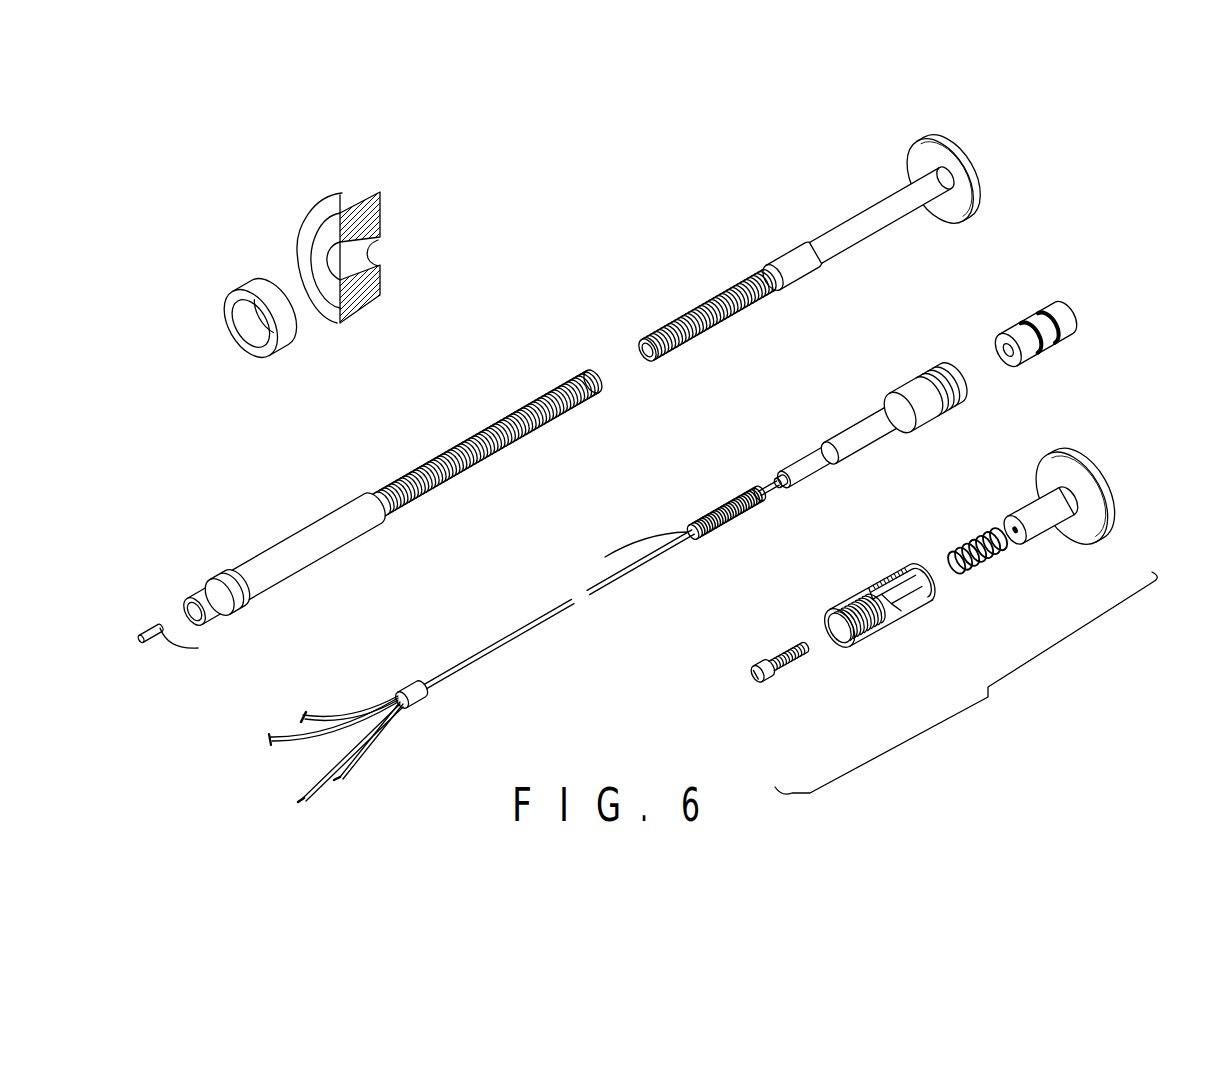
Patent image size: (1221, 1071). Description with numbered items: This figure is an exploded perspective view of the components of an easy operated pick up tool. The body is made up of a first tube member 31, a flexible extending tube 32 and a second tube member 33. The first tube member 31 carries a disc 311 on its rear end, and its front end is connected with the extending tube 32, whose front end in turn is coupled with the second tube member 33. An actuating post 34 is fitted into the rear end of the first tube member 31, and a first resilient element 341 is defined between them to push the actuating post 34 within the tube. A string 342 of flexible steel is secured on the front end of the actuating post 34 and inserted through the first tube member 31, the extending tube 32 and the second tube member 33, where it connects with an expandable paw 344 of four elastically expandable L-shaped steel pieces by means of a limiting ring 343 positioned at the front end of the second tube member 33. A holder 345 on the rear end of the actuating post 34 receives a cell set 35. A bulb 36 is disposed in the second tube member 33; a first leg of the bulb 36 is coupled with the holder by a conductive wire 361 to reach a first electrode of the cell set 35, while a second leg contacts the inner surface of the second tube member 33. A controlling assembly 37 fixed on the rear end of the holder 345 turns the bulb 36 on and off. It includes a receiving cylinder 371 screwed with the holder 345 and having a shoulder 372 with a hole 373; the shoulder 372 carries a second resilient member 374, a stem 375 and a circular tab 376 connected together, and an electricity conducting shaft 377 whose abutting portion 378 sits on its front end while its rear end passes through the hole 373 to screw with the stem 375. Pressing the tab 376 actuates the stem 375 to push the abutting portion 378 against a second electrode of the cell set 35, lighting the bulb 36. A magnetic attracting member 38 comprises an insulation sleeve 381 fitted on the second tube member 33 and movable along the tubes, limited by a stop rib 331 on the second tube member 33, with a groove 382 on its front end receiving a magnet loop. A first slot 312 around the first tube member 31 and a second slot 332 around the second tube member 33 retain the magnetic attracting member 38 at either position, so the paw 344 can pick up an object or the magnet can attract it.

The first tube member 31 is at (847, 220).
The disc 311 is at (917, 162).
The first slot 312 is at (805, 245).
The flexible extending tube 32 is at (683, 318).
The second tube member 33 is at (308, 543).
The stop rib 331 is at (207, 578).
The second slot 332 is at (227, 577).
The actuating post 34 is at (860, 452).
The first resilient element 341 is at (717, 508).
The string 342 is at (667, 552).
The limiting ring 343 is at (415, 695).
The expandable paw 344 is at (362, 747).
The holder 345 is at (913, 385).
The cell set 35 is at (1033, 320).
The bulb 36 is at (150, 628).
The conductive wire 361 is at (177, 645).
The controlling assembly 37 is at (966, 683).
The receiving cylinder 371 is at (857, 648).
The shoulder 372 is at (897, 612).
The hole 373 is at (877, 625).
The second resilient member 374 is at (973, 575).
The stem 375 is at (1037, 535).
The circular tab 376 is at (1110, 517).
The electricity conducting shaft 377 is at (790, 672).
The abutting portion 378 is at (763, 682).
The magnetic attracting member 38 is at (258, 283).
The insulation sleeve 381 is at (362, 190).
The groove 382 is at (383, 242).